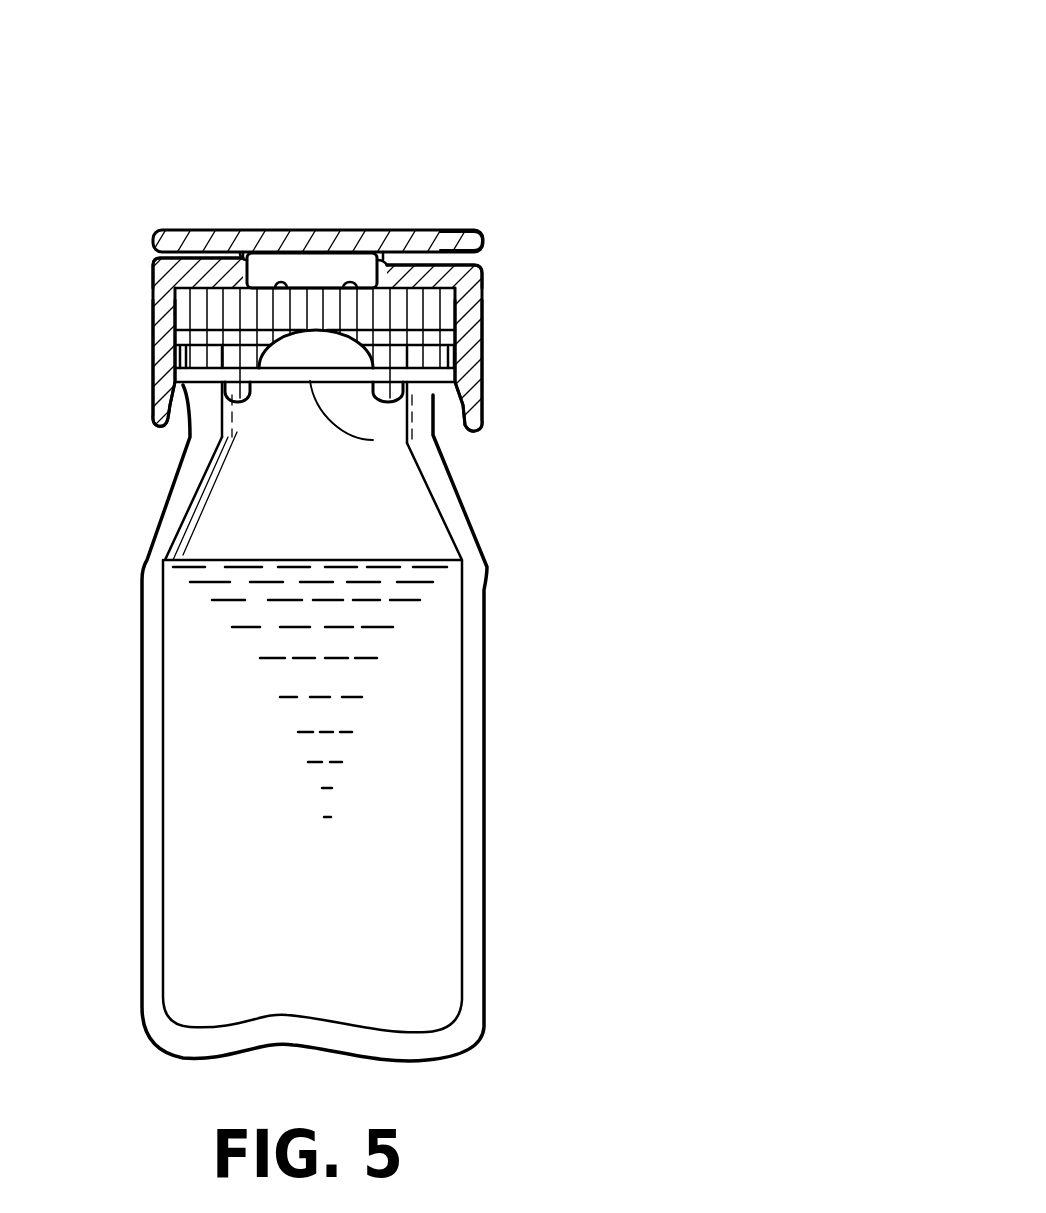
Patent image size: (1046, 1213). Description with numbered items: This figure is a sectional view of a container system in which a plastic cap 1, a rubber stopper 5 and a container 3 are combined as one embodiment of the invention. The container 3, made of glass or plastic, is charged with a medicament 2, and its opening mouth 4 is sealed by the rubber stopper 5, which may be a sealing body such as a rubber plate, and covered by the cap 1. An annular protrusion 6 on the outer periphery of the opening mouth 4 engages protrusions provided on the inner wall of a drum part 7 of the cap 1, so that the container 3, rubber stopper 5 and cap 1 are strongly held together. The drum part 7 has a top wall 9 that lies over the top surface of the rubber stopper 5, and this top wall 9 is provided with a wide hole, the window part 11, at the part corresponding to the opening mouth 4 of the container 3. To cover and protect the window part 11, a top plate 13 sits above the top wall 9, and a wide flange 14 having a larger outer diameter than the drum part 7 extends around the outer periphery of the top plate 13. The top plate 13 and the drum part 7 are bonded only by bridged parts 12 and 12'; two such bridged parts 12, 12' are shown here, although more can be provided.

The cap 1 is at (145, 187).
The medicament 2 is at (423, 878).
The container 3 is at (473, 743).
The opening mouth 4 is at (373, 440).
The rubber stopper 5 is at (333, 305).
The annular protrusion 6 is at (448, 390).
The drum part 7 is at (467, 338).
The top wall 9 is at (432, 268).
The window part 11 is at (291, 272).
The bridged part 12 is at (217, 198).
The bridged part 12' is at (602, 204).
The top plate 13 is at (278, 240).
The flange 14 is at (480, 243).